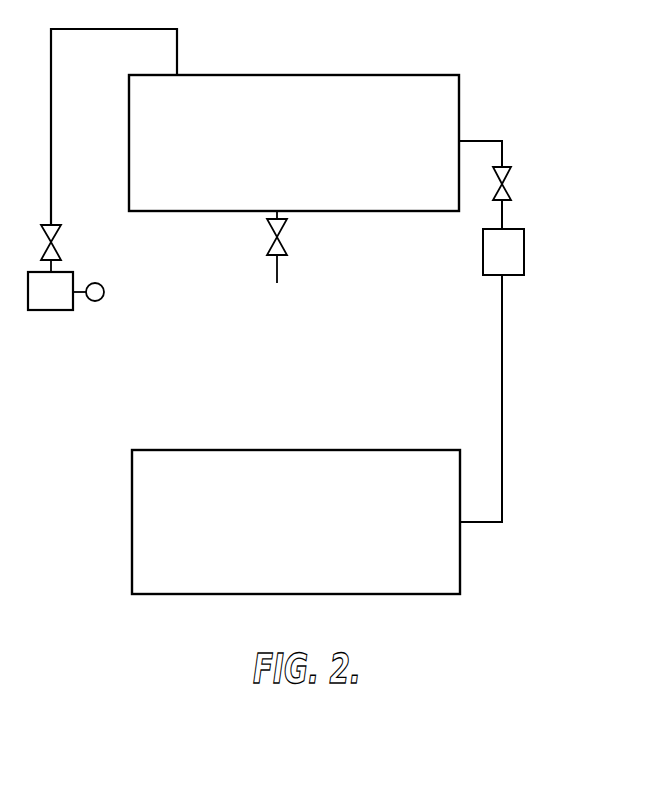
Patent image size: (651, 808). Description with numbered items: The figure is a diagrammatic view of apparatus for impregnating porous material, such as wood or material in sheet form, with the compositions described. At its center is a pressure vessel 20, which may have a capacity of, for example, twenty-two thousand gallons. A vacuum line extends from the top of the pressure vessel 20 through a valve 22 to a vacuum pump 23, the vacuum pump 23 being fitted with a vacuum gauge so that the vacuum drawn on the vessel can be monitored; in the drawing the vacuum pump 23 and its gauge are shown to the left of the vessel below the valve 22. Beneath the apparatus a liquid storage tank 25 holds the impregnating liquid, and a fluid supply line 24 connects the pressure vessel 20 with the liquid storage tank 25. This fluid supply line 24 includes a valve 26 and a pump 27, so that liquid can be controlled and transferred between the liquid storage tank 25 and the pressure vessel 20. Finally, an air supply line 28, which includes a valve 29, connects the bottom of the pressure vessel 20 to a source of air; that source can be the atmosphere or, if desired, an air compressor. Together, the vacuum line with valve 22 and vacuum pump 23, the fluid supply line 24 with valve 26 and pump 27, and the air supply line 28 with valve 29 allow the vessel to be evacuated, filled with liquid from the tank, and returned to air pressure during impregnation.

The pressure vessel 20 is at (300, 158).
The valve 22 is at (55, 233).
The vacuum pump 23 is at (98, 284).
The fluid supply line 24 is at (65, 310).
The liquid storage tank 25 is at (306, 532).
The valve 26 is at (508, 173).
The pump 27 is at (519, 241).
The air supply line 28 is at (277, 285).
The valve 29 is at (284, 225).